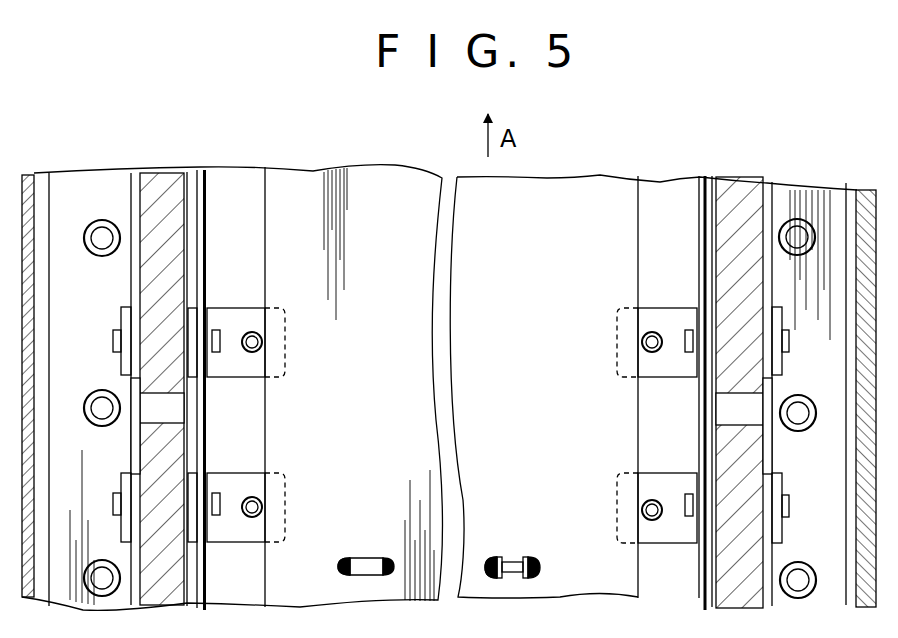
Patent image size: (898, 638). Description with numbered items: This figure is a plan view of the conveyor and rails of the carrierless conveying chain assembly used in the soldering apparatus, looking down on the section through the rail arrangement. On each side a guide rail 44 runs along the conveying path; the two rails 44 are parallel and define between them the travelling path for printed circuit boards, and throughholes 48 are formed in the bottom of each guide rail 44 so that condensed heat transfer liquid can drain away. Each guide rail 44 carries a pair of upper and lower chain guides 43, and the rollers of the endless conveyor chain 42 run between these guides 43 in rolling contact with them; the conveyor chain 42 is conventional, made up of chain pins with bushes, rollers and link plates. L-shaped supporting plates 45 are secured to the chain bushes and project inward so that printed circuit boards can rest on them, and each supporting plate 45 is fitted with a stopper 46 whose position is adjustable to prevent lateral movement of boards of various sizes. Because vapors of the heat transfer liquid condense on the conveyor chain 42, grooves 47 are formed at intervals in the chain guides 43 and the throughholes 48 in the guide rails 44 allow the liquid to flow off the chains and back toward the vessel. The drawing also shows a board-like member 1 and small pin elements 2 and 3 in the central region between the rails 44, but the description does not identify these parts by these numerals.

The plate 1 is at (313, 190).
The pin 2 is at (375, 565).
The pin head 3 is at (339, 566).
The endless conveyor chain 42 is at (206, 549).
The chain guide 43 is at (166, 192).
The guide rail 44 is at (28, 188).
The L-shaped supporting plate 45 is at (236, 308).
The stopper 46 is at (264, 340).
The groove 47 is at (173, 407).
The throughhole 48 is at (99, 221).